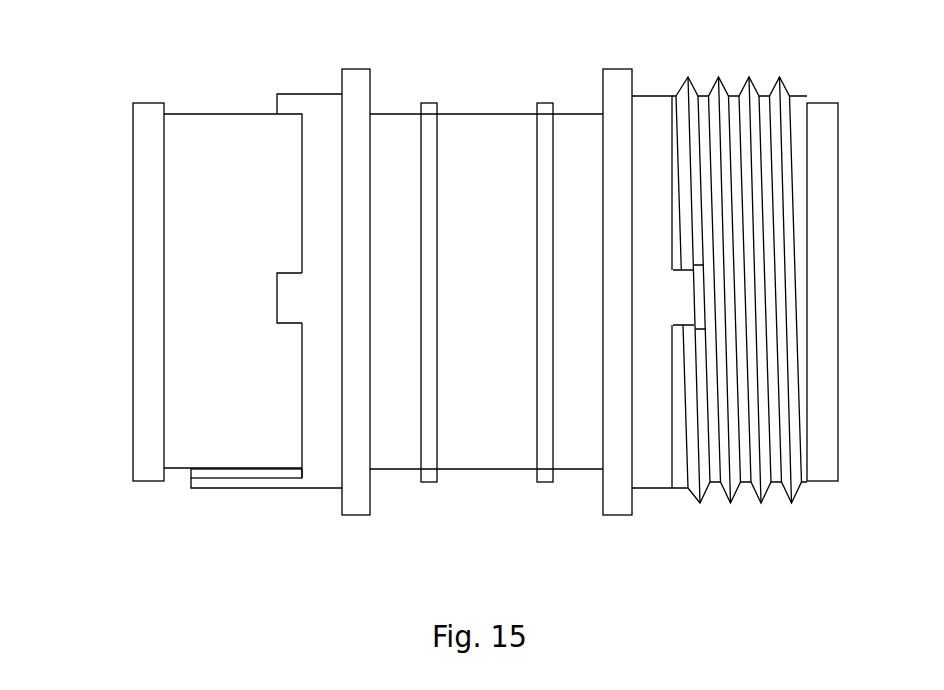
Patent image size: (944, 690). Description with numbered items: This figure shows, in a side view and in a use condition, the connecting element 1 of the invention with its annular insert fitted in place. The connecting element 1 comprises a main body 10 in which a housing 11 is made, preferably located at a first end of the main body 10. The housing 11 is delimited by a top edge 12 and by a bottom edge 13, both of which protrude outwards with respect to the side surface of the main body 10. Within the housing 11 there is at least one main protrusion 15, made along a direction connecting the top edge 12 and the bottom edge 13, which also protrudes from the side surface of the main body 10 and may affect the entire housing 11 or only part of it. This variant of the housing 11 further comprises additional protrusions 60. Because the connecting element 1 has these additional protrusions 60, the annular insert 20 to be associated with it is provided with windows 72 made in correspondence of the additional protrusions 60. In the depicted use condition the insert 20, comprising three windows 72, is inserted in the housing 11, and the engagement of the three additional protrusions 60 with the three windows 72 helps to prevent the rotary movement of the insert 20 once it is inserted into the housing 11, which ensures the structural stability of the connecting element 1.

The connecting element 1 is at (106, 258).
The main body 10 is at (502, 148).
The housing 11 is at (211, 150).
The top edge 12 is at (148, 128).
The bottom edge 13 is at (320, 118).
The main protrusion 15 is at (219, 480).
The annular insert 20 is at (735, 108).
The additional protrusion 60 is at (283, 111).
The window 72 is at (702, 297).